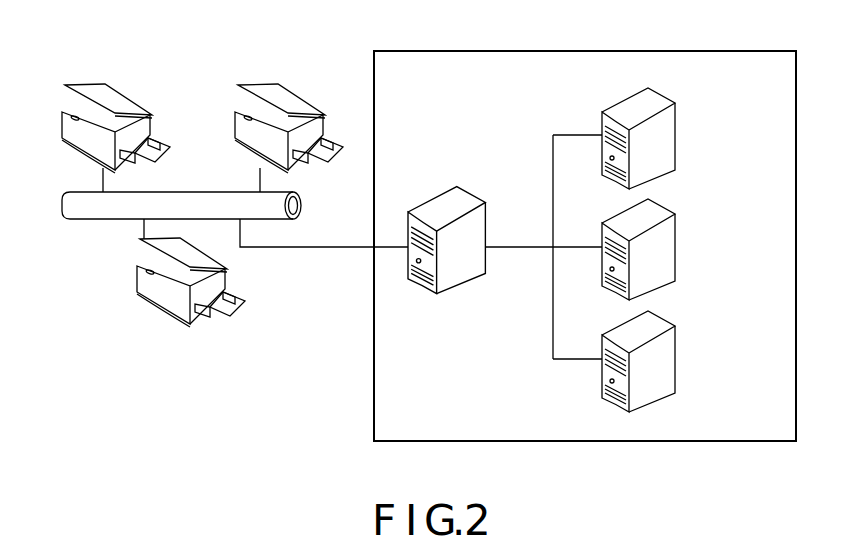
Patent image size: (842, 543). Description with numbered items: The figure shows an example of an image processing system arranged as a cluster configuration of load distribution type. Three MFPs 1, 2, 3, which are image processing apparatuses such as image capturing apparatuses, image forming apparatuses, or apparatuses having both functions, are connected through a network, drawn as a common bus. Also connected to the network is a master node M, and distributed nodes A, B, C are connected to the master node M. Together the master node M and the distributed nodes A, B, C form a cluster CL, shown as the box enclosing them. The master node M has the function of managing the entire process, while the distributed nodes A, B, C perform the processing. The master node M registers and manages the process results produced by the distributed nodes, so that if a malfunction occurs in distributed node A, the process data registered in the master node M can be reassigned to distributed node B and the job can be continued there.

The MFP 1 is at (118, 100).
The MFP 2 is at (291, 100).
The MFP 3 is at (193, 250).
The master node M is at (465, 198).
The distributed node A is at (655, 97).
The distributed node B is at (655, 216).
The distributed node C is at (653, 322).
The cluster CL is at (713, 50).